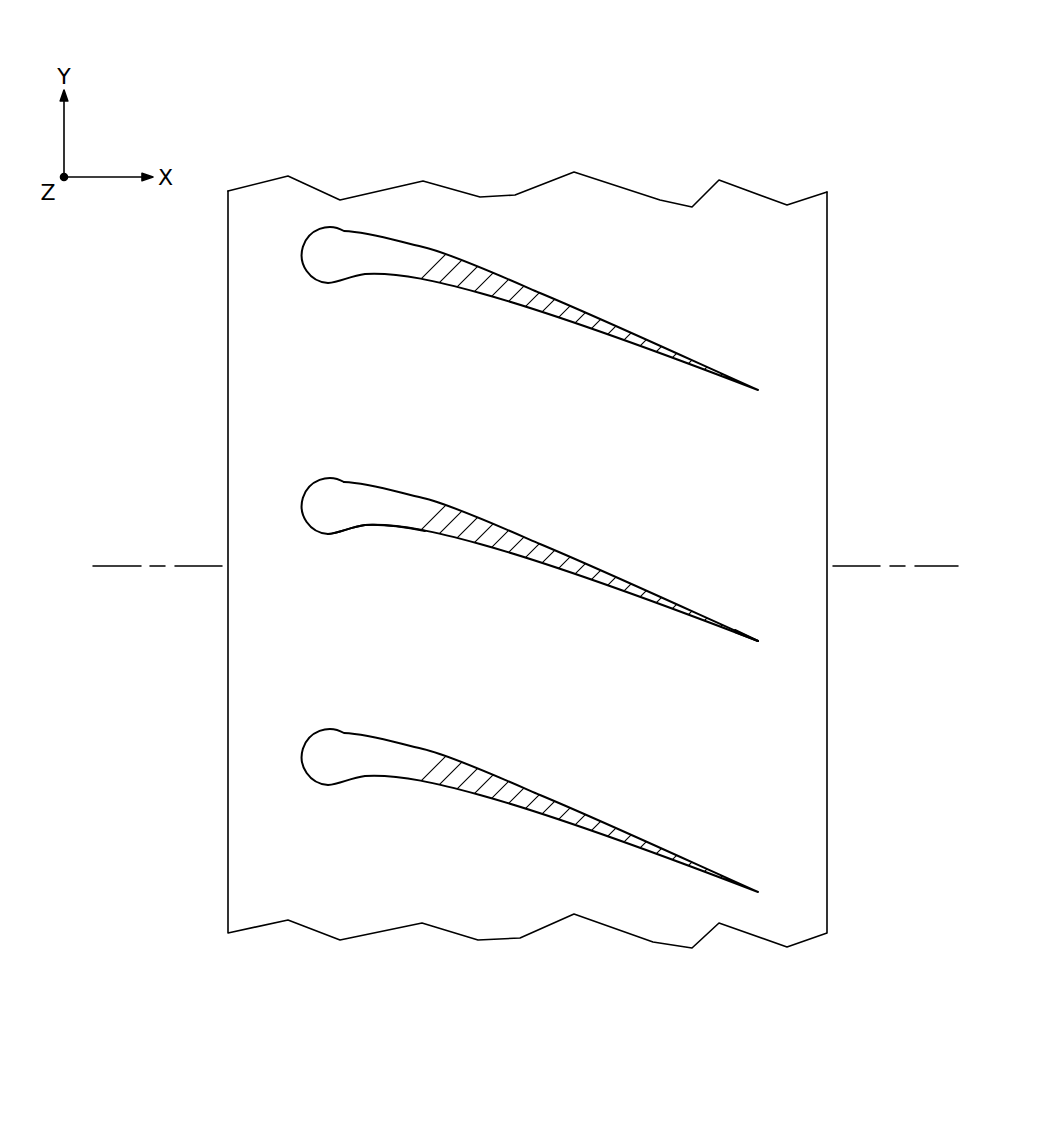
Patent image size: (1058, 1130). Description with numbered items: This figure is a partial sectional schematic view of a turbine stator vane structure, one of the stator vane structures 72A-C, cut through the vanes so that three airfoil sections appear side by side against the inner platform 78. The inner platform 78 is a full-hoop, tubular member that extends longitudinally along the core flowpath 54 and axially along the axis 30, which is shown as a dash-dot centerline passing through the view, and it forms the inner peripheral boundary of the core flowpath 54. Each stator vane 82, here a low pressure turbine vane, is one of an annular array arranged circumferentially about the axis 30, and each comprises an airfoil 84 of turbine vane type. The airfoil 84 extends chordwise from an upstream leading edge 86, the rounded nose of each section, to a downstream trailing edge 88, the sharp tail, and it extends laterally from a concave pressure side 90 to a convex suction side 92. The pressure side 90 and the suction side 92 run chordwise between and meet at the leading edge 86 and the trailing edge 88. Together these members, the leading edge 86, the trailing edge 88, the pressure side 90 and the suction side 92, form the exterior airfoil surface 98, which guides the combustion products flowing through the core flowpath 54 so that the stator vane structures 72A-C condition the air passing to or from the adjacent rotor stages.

The axis 30 is at (110, 565).
The core flowpath 54 is at (248, 391).
The stator vane structures 72A-C is at (828, 104).
The inner platform 78 is at (718, 173).
The stator vane 82 is at (611, 515).
The airfoil 84 is at (611, 515).
The leading edge 86 is at (302, 508).
The trailing edge 88 is at (758, 641).
The pressure side 90 is at (523, 563).
The suction side 92 is at (513, 530).
The exterior airfoil surface 98 is at (416, 541).